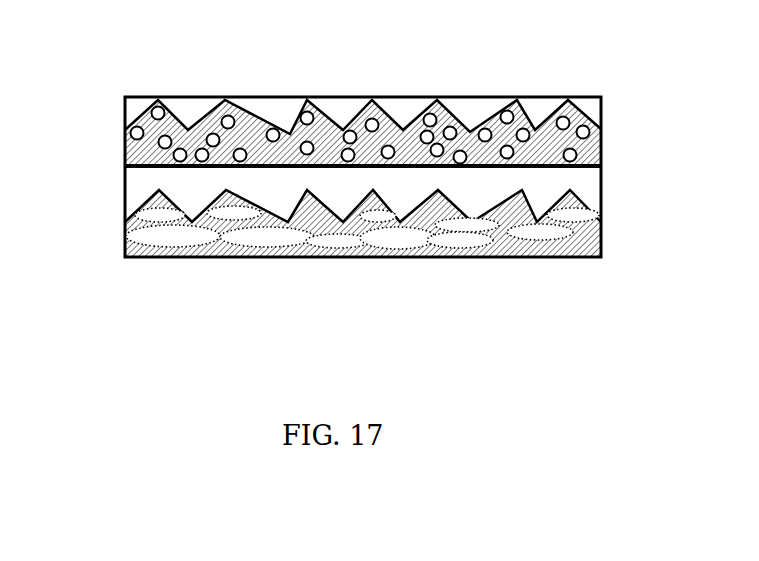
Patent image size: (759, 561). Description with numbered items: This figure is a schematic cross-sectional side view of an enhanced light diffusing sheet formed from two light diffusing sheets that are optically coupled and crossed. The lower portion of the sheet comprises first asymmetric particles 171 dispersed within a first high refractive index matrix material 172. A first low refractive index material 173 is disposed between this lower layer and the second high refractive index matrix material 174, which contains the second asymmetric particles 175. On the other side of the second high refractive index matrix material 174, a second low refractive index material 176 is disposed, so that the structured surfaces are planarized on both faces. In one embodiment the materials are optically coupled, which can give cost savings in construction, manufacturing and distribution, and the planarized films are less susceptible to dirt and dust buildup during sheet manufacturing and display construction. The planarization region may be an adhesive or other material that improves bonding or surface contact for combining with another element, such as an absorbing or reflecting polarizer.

The first asymmetric particles 171 is at (542, 233).
The first high refractive index matrix material 172 is at (602, 243).
The first low refractive index material 173 is at (593, 193).
The second high refractive index matrix material 174 is at (602, 152).
The second asymmetric particles 175 is at (590, 126).
The second low refractive index material 176 is at (583, 107).